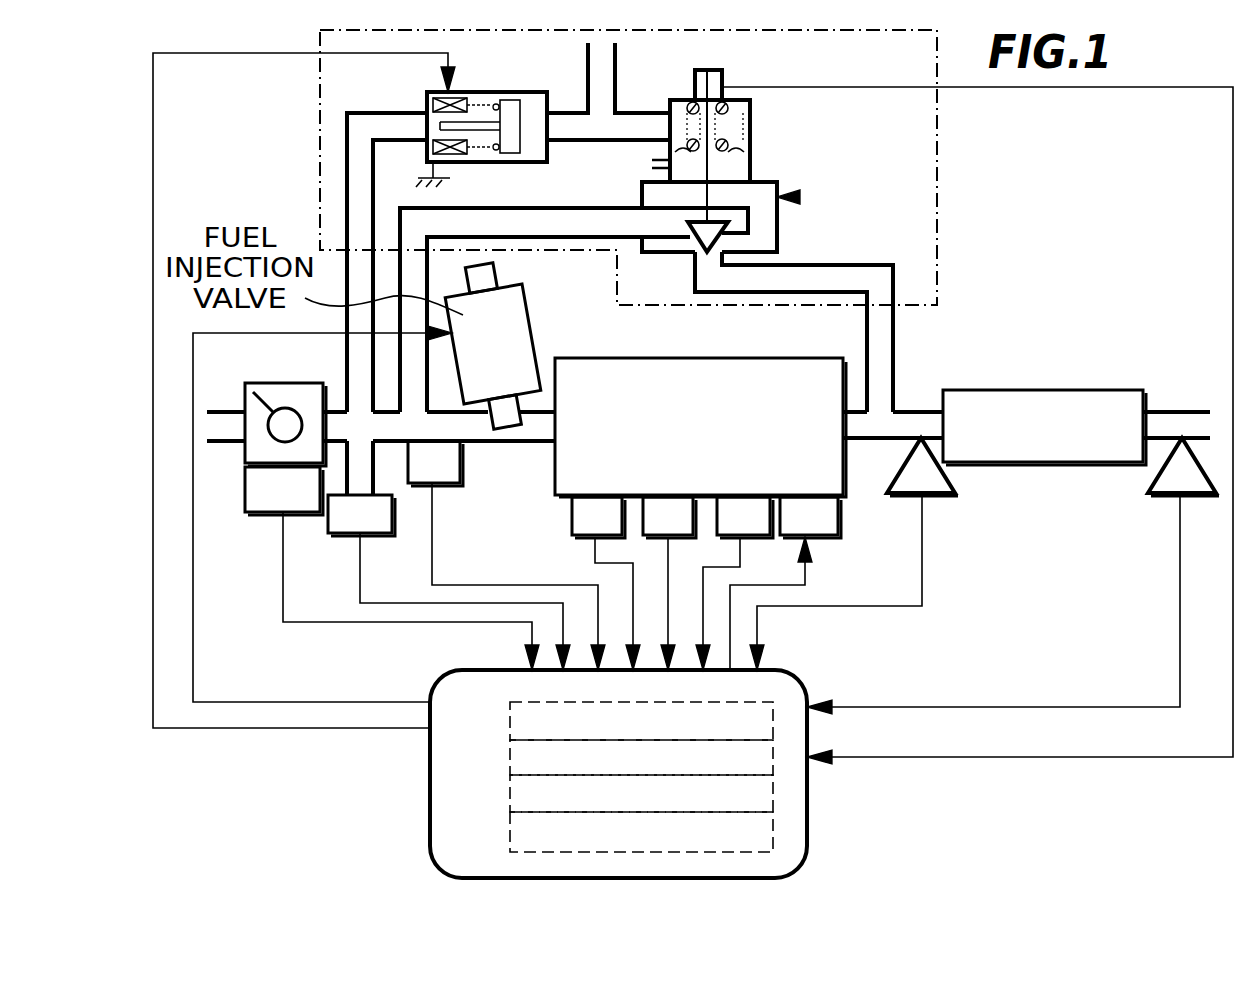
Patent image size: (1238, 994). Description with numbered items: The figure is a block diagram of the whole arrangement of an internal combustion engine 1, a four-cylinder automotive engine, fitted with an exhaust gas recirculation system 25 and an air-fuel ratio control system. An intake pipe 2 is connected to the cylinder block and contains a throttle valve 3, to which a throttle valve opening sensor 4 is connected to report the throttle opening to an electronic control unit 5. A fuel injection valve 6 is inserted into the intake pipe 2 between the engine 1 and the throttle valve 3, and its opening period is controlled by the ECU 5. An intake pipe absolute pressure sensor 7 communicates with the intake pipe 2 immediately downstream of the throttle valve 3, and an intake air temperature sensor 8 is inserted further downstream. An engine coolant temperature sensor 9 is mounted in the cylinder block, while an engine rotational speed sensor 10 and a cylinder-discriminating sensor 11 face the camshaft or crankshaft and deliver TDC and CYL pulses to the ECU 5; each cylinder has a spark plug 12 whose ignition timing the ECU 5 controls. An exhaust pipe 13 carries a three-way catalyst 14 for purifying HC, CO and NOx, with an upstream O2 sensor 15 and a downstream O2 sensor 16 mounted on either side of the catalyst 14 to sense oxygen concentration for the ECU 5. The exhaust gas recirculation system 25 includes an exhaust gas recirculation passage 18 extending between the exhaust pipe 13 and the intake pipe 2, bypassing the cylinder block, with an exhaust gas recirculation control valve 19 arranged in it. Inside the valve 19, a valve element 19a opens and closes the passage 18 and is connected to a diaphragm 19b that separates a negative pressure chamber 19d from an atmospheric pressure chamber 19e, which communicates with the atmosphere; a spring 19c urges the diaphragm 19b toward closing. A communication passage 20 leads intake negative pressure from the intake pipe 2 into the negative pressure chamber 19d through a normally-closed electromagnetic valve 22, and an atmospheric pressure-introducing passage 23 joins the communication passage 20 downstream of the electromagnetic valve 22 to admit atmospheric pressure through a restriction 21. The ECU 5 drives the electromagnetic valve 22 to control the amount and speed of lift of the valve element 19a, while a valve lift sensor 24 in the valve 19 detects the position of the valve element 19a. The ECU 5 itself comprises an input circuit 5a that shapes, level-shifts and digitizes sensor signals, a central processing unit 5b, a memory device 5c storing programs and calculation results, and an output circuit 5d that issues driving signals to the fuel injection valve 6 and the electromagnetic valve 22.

The internal combustion engine 1 is at (808, 358).
The intake pipe 2 is at (520, 443).
The throttle valve 3 is at (277, 395).
The throttle valve opening sensor 4 is at (305, 514).
The electronic control unit 5 is at (427, 765).
The input circuit 5a is at (775, 712).
The central processing unit 5b is at (775, 757).
The memory device 5c is at (775, 795).
The output circuit 5d is at (775, 832).
The fuel injection valve 6 is at (535, 313).
The intake pipe absolute pressure sensor 7 is at (380, 535).
The intake air temperature sensor 8 is at (452, 486).
The engine coolant temperature sensor 9 is at (605, 538).
The engine rotational speed sensor 10 is at (678, 538).
The cylinder-discriminating sensor 11 is at (755, 538).
The spark plug 12 is at (818, 538).
The exhaust pipe 13 is at (915, 412).
The three-way catalyst 14 is at (1030, 390).
The upstream O2 sensor 15 is at (945, 465).
The downstream O2 sensor 16 is at (1170, 494).
The exhaust gas recirculation passage 18 is at (428, 206).
The exhaust gas recirculation control valve 19 is at (800, 197).
The valve element 19a is at (728, 232).
The diaphragm 19b is at (745, 143).
The spring 19c is at (728, 108).
The negative pressure chamber 19d is at (745, 122).
The atmospheric pressure chamber 19e is at (668, 165).
The communication passage 20 is at (388, 108).
The restriction 21 is at (588, 62).
The electromagnetic valve 22 is at (520, 90).
The atmospheric pressure-introducing passage 23 is at (620, 72).
The valve lift sensor 24 is at (722, 72).
The exhaust gas recirculation system 25 is at (937, 168).